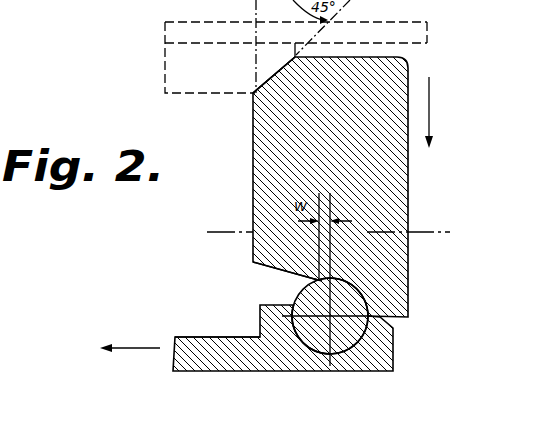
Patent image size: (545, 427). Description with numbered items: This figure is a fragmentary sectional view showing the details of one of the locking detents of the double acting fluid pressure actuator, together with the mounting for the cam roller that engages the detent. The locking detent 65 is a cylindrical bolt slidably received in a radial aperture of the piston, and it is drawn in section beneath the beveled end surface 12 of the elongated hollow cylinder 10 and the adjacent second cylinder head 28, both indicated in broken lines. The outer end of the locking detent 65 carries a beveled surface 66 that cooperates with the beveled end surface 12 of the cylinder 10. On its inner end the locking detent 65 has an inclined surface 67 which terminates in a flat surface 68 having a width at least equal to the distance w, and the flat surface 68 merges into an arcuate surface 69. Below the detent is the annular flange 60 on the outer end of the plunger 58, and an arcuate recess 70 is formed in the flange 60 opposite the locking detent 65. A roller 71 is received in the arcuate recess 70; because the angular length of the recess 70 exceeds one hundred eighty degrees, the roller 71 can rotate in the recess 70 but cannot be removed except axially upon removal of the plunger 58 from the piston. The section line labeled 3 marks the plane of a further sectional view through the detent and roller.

The elongated hollow cylinder 10 is at (199, 40).
The beveled end surface 12 is at (278, 72).
The second cylinder head 28 is at (381, 19).
The locking detent 65 is at (400, 162).
The beveled surface 66 is at (277, 70).
The inclined surface 67 is at (270, 267).
The flat surface 68 is at (319, 280).
The arcuate surface 69 is at (360, 294).
The section line 3- 3 is at (222, 227).
The roller 71 is at (352, 333).
The annular flange 60 is at (393, 365).
The arcuate recess 70 is at (304, 340).
The plunger 58 is at (215, 319).